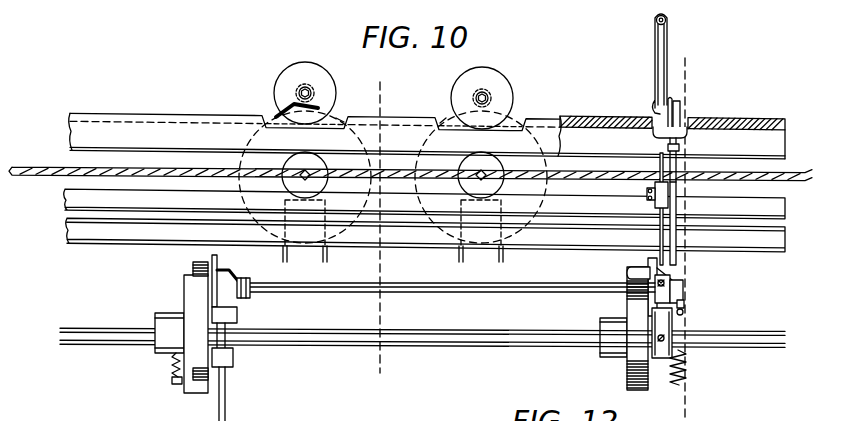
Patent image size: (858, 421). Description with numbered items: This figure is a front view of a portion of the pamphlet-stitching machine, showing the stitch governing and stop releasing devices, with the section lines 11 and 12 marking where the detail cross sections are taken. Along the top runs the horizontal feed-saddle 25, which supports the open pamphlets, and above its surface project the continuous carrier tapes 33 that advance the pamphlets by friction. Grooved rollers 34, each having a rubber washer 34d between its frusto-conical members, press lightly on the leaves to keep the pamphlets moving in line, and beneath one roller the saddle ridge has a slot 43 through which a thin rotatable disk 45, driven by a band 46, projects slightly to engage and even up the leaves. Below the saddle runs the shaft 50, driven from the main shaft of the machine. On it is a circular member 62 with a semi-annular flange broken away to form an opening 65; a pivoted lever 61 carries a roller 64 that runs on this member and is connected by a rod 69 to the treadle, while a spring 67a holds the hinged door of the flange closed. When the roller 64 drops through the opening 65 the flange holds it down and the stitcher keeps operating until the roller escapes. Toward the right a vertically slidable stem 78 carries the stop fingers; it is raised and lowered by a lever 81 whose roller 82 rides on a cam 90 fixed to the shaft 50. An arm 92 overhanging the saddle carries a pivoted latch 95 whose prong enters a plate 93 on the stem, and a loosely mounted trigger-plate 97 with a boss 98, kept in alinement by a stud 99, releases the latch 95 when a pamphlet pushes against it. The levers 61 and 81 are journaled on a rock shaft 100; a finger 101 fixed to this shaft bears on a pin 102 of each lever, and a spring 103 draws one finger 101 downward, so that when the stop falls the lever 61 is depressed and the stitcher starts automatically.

The section line 11— 11 is at (379, 231).
The section line 12— 12 is at (689, 230).
The feed-saddle 25 is at (585, 112).
The carrier-belts or tapes 33 is at (418, 165).
The grooved rollers 34 is at (297, 72).
The washer 34d is at (277, 113).
The slot 43 is at (513, 121).
The rotatable disk 45 is at (339, 117).
The band 46 is at (326, 251).
The shaft 50 is at (113, 338).
The lever 61 is at (224, 265).
The circular member 62 is at (197, 298).
The roller 64 is at (194, 267).
The opening 65 is at (201, 384).
The spring 67a is at (177, 368).
The rod 69 is at (226, 401).
The stem 78 is at (676, 245).
The lever 81 is at (651, 267).
The roller 82 is at (627, 268).
The cam 90 is at (627, 376).
The arm 92 is at (667, 21).
The plate 93 is at (657, 146).
The latch 95 is at (657, 68).
The trigger-plate 97 is at (681, 113).
The boss or projection 98 is at (675, 106).
The stud 99 is at (680, 149).
The rock shaft 100 is at (418, 292).
The finger 101 is at (681, 290).
The pin 102 is at (686, 304).
The spring 103 is at (684, 377).